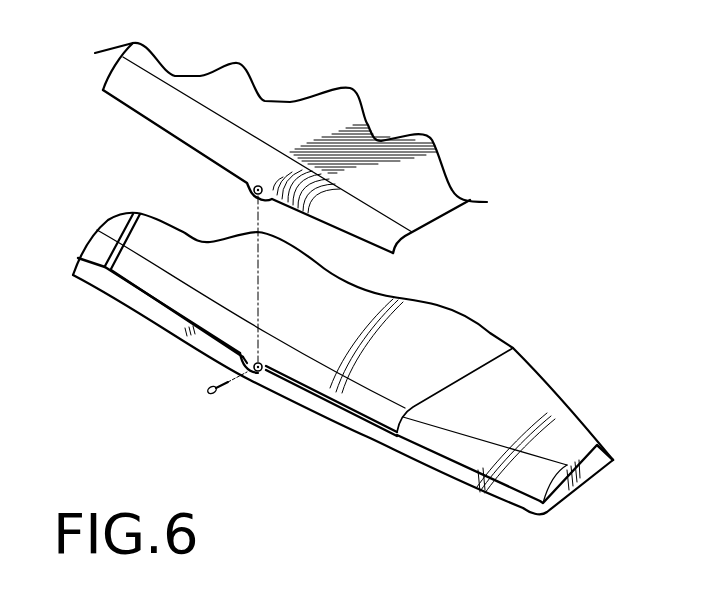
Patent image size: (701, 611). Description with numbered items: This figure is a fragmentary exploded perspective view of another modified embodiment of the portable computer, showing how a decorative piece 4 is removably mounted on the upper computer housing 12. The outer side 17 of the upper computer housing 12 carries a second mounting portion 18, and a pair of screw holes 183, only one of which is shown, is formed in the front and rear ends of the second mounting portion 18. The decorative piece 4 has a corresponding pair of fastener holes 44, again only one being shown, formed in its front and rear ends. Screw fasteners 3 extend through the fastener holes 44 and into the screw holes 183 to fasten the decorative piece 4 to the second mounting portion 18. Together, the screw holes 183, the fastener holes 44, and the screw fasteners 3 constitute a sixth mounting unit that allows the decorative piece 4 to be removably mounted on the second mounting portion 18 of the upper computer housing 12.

The decorative piece 4 is at (422, 200).
The fastener hole 44 is at (253, 193).
The second mounting portion 18 is at (180, 265).
The outer side 17 is at (527, 402).
The upper computer housing 12 is at (473, 487).
The screw hole 183 is at (258, 373).
The screw fastener 3 is at (215, 393).